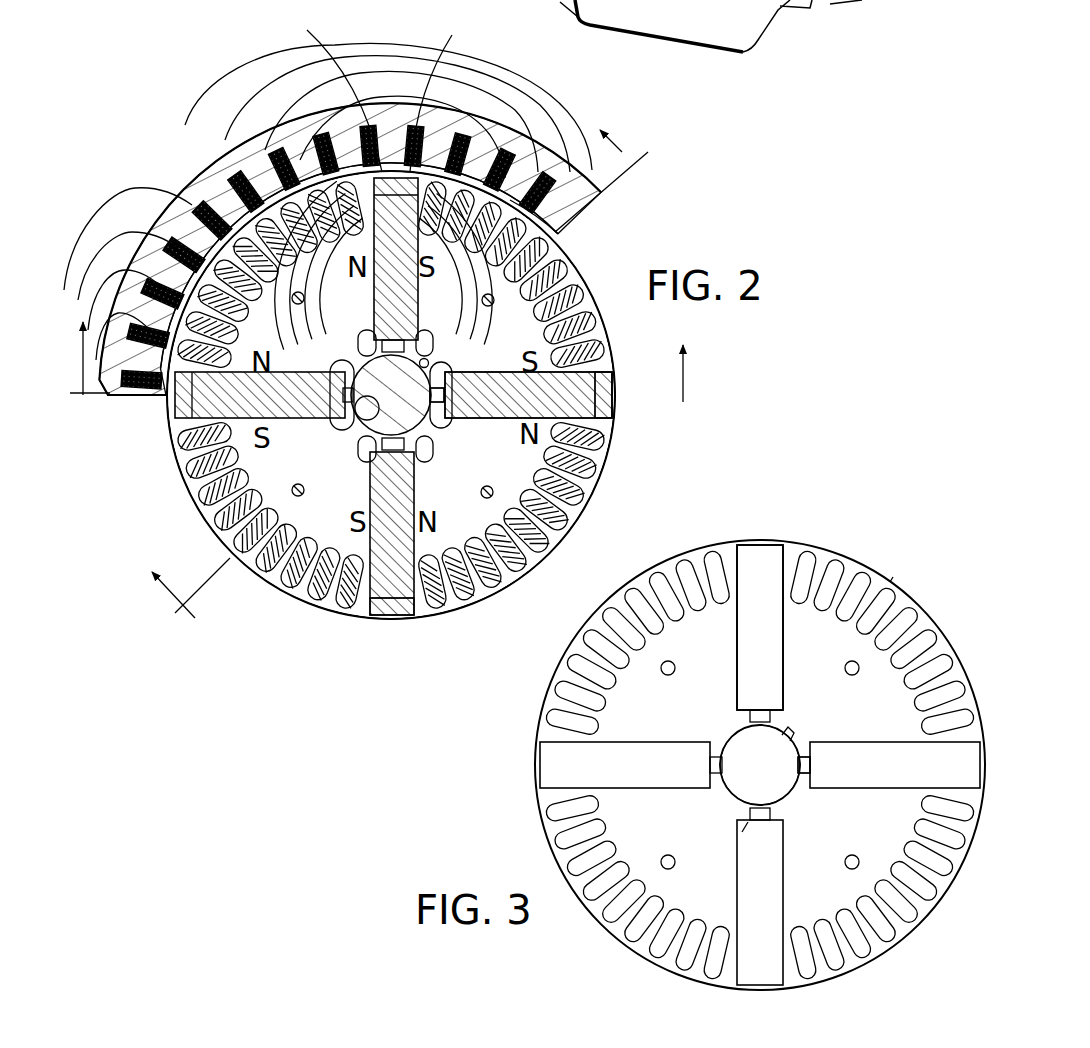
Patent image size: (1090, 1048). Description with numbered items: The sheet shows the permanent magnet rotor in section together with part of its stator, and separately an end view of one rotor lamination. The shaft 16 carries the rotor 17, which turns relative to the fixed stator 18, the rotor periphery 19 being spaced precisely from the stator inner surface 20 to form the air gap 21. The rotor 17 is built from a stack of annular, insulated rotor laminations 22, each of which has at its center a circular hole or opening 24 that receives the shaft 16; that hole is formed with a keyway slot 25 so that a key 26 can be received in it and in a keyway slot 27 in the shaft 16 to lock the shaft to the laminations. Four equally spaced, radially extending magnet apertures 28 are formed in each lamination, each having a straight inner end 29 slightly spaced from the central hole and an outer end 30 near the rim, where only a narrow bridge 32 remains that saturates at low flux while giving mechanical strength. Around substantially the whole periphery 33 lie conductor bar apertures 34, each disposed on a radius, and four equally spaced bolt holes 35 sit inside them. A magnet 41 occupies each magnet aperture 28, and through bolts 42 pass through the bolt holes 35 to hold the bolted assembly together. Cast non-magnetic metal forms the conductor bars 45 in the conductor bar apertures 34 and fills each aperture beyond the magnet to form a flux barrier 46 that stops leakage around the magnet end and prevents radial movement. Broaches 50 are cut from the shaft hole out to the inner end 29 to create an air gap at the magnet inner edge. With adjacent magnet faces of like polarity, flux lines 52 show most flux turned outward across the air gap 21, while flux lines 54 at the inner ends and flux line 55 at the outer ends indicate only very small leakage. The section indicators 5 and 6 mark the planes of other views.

In FIG. 2, the section line 5- 5 is at (405, 388).
In FIG. 2, the section line 6- 6 is at (381, 378).
In FIG. 2, the shaft 16 is at (400, 428).
In FIG. 2, the rotor 17 is at (330, 622).
In FIG. 2, the stator 18 is at (202, 170).
In FIG. 2, the periphery 19 is at (610, 318).
In FIG. 2, the inner surface 20 is at (545, 236).
In FIG. 2, the air gap 21 is at (200, 188).
In FIG. 2, the rotor lamination 22 is at (430, 620).
In FIG. 3, the rotor lamination 22 is at (846, 546).
In FIG. 3, the hole or opening 24 is at (740, 734).
In FIG. 3, the keyway slot 25 is at (788, 735).
In FIG. 2, the key 26 is at (428, 350).
In FIG. 2, the keyway slot 27 is at (430, 360).
In FIG. 2, the magnet aperture 28 is at (462, 406).
In FIG. 3, the magnet aperture 28 is at (778, 642).
In FIG. 3, the inner end 29 is at (790, 734).
In FIG. 3, the outer end 30 is at (760, 542).
In FIG. 2, the bridge 32 is at (645, 412).
In FIG. 3, the bridge 32 is at (768, 542).
In FIG. 3, the periphery 33 is at (682, 550).
In FIG. 3, the conductor bar aperture 34 is at (892, 578).
In FIG. 3, the bolt hole 35 is at (675, 670).
In FIG. 2, the magnet 41 is at (410, 484).
In FIG. 2, the through bolt 42 is at (304, 490).
In FIG. 2, the conductor bar 45 is at (598, 348).
In FIG. 2, the flux barrier 46 is at (388, 612).
In FIG. 2, the broach 50 is at (445, 382).
In FIG. 3, the broach 50 is at (806, 782).
In FIG. 2, the flux lines 52 is at (574, 82).
In FIG. 2, the flux lines 54 is at (363, 418).
In FIG. 2, the flux line 55 is at (383, 180).